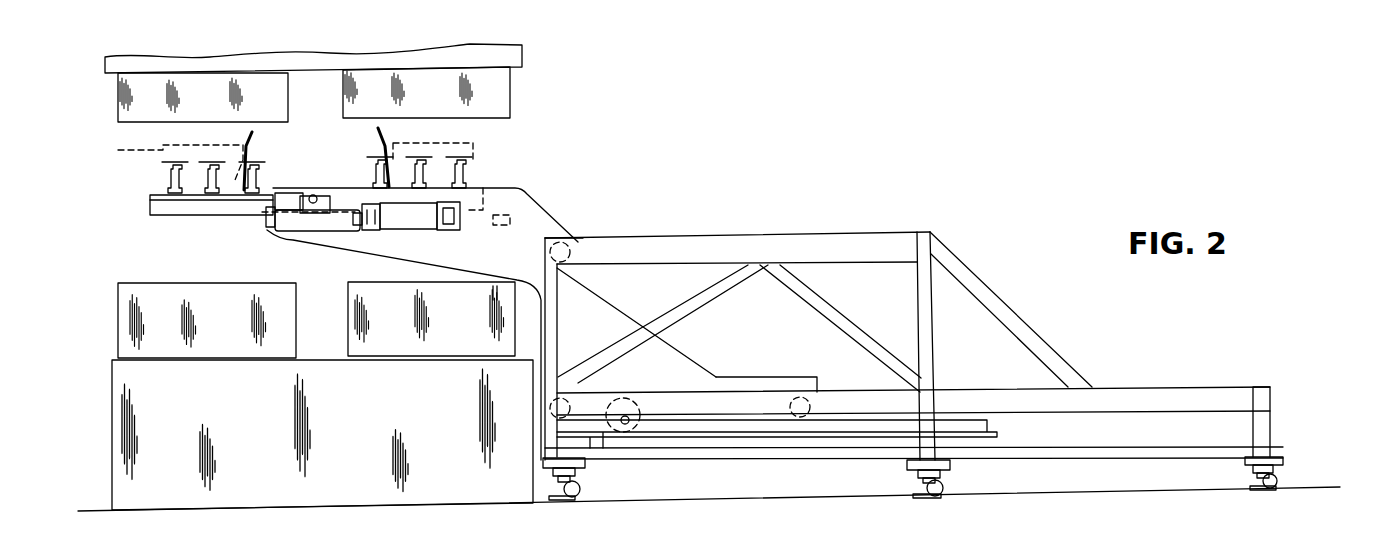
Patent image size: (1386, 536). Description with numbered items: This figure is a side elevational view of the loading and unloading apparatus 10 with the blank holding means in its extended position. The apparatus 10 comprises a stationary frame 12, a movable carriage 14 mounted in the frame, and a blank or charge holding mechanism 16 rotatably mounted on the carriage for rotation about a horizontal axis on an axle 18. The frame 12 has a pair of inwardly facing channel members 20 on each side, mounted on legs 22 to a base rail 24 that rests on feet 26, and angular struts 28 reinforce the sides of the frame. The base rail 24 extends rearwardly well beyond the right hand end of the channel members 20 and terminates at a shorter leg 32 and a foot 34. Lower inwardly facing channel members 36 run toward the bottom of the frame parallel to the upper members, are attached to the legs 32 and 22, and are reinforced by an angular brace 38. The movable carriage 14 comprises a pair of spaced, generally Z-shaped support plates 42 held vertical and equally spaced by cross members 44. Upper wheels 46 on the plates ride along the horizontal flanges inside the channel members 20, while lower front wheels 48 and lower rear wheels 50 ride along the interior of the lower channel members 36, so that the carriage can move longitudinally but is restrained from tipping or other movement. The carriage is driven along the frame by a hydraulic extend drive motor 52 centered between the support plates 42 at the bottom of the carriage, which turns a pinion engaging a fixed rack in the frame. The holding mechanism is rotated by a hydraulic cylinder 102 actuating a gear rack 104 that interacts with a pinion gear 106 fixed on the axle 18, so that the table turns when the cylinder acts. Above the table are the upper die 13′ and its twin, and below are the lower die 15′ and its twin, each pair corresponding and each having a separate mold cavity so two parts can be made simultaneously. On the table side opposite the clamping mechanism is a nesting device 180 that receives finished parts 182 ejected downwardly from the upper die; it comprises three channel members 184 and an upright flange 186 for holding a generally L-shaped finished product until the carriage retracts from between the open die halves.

The loading and unloading apparatus 10 is at (938, 335).
The stationary frame 12 is at (938, 356).
The upper die 13′ is at (131, 102).
The movable carriage 14 is at (547, 227).
The lower die 15′ is at (214, 348).
The blank or charge holding mechanism 16 is at (168, 207).
The axle 18 is at (308, 194).
The channel members 20 is at (840, 247).
The legs 22 is at (927, 301).
The base rail 24 is at (1067, 456).
The feet 26 is at (566, 499).
The angular struts 28 is at (783, 286).
The shorter leg 32 is at (1263, 419).
The foot 34 is at (1286, 475).
The lower channel members 36 is at (1205, 399).
The angular brace 38 is at (1023, 332).
The support plates 42 is at (573, 229).
The cross members 44 is at (511, 214).
The upper wheels 46 is at (579, 244).
The lower front wheels 48 is at (573, 402).
The lower rear wheels 50 is at (797, 395).
The hydraulic extend drive motor 52 is at (641, 407).
The hydraulic cylinder 102 is at (417, 221).
The gear rack 104 is at (327, 219).
The pinion gear 106 is at (327, 189).
The nesting device 180 is at (325, 152).
The finished parts 182 is at (510, 129).
The channel members 184 is at (167, 180).
The upright flange 186 is at (378, 138).